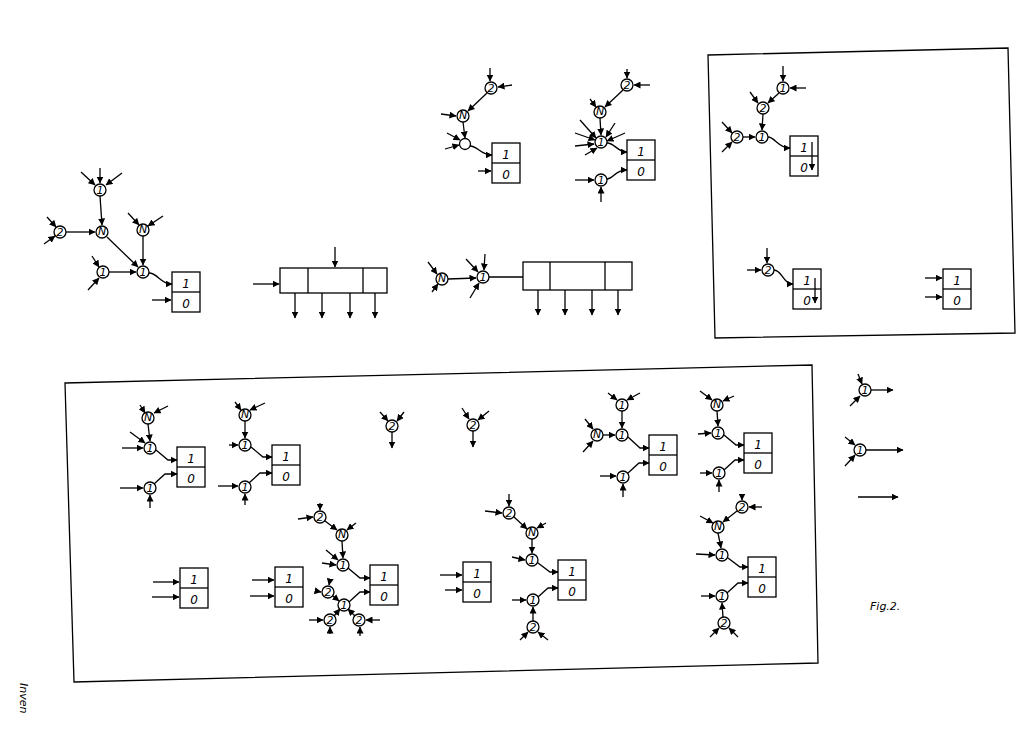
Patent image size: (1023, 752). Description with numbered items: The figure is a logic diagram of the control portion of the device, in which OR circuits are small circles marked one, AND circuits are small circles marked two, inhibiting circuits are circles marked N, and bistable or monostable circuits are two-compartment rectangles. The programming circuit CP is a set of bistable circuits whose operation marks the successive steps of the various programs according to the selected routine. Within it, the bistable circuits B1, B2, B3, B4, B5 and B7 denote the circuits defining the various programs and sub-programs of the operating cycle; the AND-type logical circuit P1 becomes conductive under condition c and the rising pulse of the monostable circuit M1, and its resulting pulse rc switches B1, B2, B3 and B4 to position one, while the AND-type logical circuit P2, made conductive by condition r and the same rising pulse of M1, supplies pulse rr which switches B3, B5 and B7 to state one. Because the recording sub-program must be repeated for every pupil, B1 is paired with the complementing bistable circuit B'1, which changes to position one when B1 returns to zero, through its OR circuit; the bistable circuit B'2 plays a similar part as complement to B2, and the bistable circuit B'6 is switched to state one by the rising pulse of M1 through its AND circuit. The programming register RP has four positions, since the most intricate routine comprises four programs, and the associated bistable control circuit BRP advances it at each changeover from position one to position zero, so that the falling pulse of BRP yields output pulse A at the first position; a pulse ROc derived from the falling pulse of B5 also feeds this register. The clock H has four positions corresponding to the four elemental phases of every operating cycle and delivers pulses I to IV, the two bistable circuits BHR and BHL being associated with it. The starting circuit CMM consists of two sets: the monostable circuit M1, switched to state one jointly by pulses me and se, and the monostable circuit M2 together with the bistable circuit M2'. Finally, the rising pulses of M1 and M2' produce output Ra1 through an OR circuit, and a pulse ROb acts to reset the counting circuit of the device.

The bistable control circuit BRP is at (184, 272).
The programming register RP is at (307, 284).
The clock H is at (521, 288).
The bistable circuit BHR is at (512, 143).
The bistable circuit BHL is at (652, 141).
The starting circuit CMM is at (861, 193).
The monostable circuit M1 is at (800, 139).
The monostable circuit M2 is at (774, 272).
The bistable circuit M2' is at (934, 278).
The programming circuit CP is at (77, 392).
The complementing bistable circuit B'1 is at (148, 457).
The bistable circuit B'2 is at (254, 454).
The bistable circuit B'6 is at (622, 445).
The bistable circuit B1 is at (188, 569).
The bistable circuit B2 is at (283, 568).
The bistable circuit B3 is at (380, 566).
The bistable circuit B4 is at (472, 563).
The bistable circuit B5 is at (572, 561).
The bistable circuit B7 is at (756, 434).
The AND-type logical circuit P1 is at (398, 428).
The AND-type logical circuit P2 is at (479, 428).
The output pulse Ra1 is at (878, 391).
The reset pulse ROb is at (879, 453).
The control pulse ROc is at (877, 496).